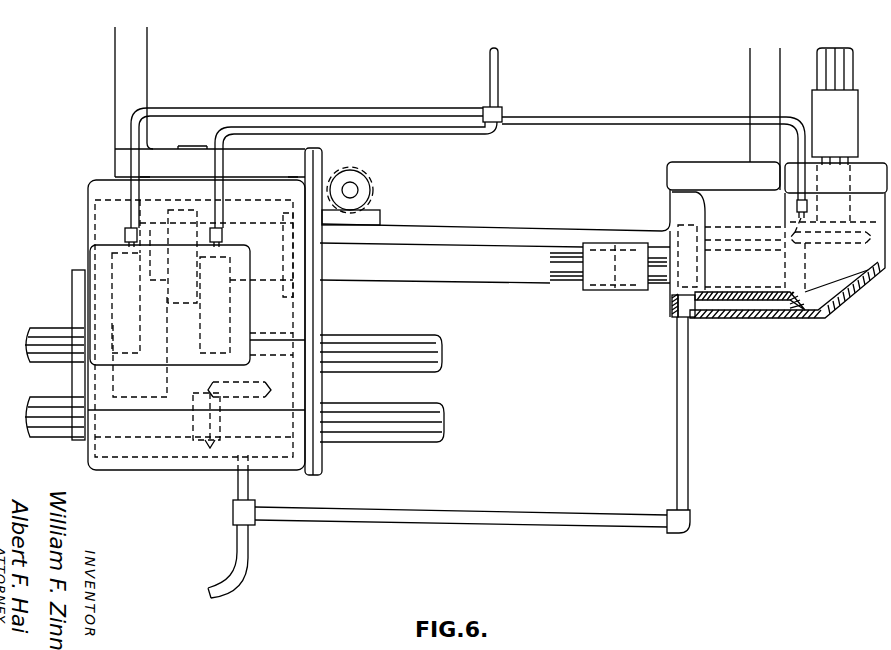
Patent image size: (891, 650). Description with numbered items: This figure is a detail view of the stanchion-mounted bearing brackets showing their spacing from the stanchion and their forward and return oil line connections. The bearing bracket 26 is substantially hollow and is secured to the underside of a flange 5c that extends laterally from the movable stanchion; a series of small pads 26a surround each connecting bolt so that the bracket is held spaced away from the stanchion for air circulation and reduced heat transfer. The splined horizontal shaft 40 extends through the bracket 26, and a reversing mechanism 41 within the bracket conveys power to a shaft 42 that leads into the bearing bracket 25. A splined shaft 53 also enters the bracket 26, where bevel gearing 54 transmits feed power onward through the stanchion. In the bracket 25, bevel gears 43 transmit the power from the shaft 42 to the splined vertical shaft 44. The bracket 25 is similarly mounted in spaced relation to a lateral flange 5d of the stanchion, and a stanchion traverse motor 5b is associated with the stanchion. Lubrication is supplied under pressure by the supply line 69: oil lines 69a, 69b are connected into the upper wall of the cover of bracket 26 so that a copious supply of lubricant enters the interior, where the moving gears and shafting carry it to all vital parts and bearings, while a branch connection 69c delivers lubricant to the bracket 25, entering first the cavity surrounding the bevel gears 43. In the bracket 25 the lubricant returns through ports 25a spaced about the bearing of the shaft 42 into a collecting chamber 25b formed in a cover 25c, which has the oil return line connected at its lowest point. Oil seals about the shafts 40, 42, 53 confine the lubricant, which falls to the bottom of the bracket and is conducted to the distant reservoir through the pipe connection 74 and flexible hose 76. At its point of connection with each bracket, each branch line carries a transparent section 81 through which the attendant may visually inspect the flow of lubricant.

The stanchion traverse motor 5b is at (723, 119).
The flange 5c is at (115, 160).
The lateral flange 5d is at (115, 82).
The bearing bracket 25 is at (820, 322).
The ports 25a is at (753, 227).
The collecting chamber 25b is at (672, 302).
The cover 25c is at (673, 317).
The bearing bracket 26 is at (88, 232).
The pads 26a is at (145, 177).
The splined horizontal shaft 40 is at (402, 337).
The reversing mechanism 41 is at (195, 318).
The shaft 42 is at (513, 283).
The bevel gears 43 is at (807, 257).
The splined vertical shaft 44 is at (853, 73).
The splined shaft 53 is at (430, 405).
The bevel gearing 54 is at (222, 427).
The pressure lubricant supply line 69 is at (502, 62).
The oil line 69a is at (367, 110).
The oil line 69b is at (423, 135).
The branch connection 69c is at (632, 117).
The pipe connection 74 is at (372, 525).
The flexible hose 76 is at (250, 575).
The transparent section 81 is at (125, 234).